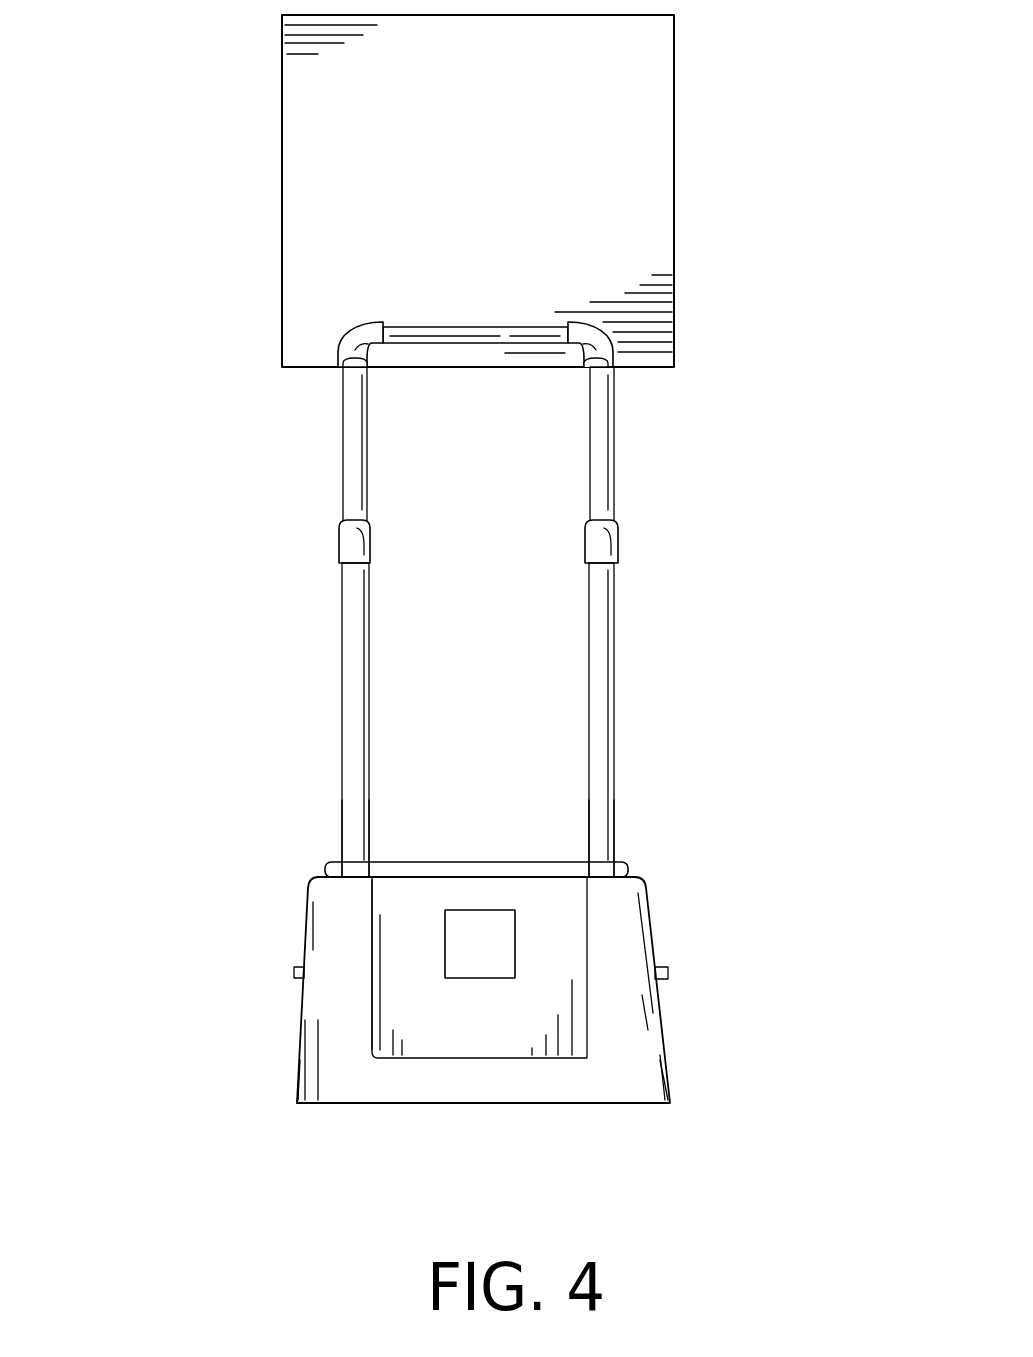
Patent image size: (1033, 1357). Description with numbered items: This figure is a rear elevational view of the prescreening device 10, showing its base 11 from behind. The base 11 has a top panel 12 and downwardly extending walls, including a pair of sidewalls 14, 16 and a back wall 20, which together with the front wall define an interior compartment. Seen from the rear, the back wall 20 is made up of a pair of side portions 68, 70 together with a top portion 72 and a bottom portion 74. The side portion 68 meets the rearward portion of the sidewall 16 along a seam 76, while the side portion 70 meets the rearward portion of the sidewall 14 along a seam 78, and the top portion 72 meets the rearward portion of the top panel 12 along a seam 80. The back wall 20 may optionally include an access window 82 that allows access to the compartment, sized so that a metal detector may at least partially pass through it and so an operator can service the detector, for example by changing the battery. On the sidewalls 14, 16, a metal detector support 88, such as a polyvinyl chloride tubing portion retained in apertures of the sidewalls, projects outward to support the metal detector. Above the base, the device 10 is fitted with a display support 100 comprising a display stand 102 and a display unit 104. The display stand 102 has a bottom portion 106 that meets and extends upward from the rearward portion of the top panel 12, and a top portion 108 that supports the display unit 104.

The prescreening device 10 is at (178, 505).
The base 11 is at (268, 870).
The top panel 12 is at (548, 870).
The sidewall 14 is at (650, 920).
The sidewall 16 is at (300, 1003).
The back wall 20 is at (575, 940).
The side portion 68 is at (328, 1073).
The side portion 70 is at (622, 1065).
The top portion 72 is at (415, 910).
The bottom portion 74 is at (427, 1078).
The seam 76 is at (290, 1093).
The seam 78 is at (660, 1008).
The seam 80 is at (393, 878).
The access window 82 is at (546, 1071).
The metal detector support 88 is at (296, 968).
The display support 100 is at (620, 490).
The display stand 102 is at (343, 640).
The display unit 104 is at (281, 223).
The bottom portion 106 is at (345, 813).
The top portion 108 is at (343, 420).